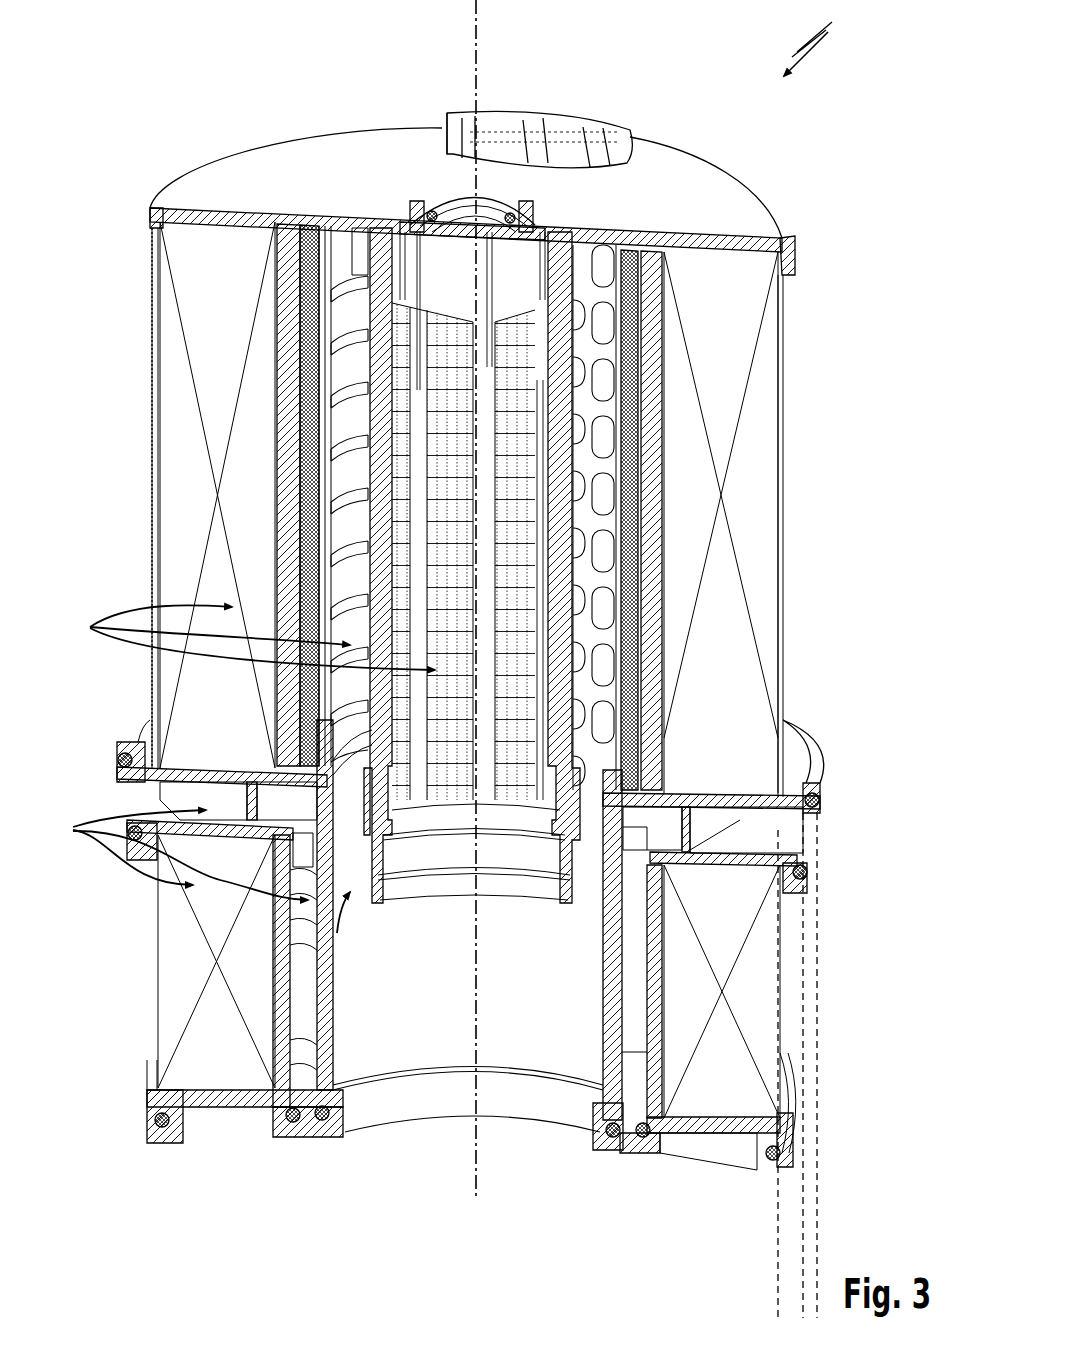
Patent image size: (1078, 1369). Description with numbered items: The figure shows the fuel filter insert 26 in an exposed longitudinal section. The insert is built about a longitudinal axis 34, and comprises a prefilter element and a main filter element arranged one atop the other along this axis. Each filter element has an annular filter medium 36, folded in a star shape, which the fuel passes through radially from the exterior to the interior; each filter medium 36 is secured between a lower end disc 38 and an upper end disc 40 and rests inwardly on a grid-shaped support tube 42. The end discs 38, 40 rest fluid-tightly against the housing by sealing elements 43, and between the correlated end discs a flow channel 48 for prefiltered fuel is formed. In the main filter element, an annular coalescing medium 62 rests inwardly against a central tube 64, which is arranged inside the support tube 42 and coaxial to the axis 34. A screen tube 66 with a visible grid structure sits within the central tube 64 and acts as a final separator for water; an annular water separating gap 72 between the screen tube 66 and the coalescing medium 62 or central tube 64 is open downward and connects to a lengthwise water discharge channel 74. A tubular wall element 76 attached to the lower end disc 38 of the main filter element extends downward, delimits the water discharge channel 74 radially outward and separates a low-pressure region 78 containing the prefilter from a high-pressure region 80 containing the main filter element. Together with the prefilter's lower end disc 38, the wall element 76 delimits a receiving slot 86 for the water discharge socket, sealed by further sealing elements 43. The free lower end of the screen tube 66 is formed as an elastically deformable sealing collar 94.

The fuel filter insert 26 is at (826, 39).
The longitudinal axis 34 is at (480, 70).
The filter medium 36 is at (728, 371).
The lower end disc 38 is at (653, 1143).
The upper end disc 40 is at (633, 201).
The support tube 42 is at (285, 425).
The sealing element 43 is at (820, 803).
The flow channel 48 is at (747, 830).
The coalescing medium 62 is at (312, 492).
The central tube 64 is at (322, 520).
The screen tube 66 is at (380, 565).
The water separating gap 72 is at (350, 368).
The water discharge channel 74 is at (327, 927).
The wall element 76 is at (322, 965).
The low-pressure region 78 is at (190, 871).
The high-pressure region 80 is at (241, 637).
The receiving slot 86 is at (305, 1122).
The sealing collar 94 is at (395, 868).